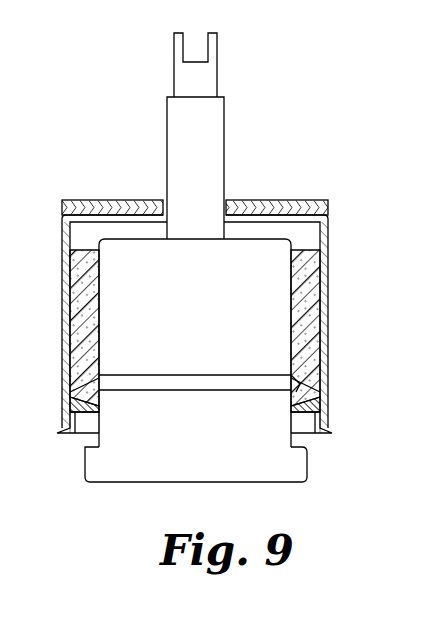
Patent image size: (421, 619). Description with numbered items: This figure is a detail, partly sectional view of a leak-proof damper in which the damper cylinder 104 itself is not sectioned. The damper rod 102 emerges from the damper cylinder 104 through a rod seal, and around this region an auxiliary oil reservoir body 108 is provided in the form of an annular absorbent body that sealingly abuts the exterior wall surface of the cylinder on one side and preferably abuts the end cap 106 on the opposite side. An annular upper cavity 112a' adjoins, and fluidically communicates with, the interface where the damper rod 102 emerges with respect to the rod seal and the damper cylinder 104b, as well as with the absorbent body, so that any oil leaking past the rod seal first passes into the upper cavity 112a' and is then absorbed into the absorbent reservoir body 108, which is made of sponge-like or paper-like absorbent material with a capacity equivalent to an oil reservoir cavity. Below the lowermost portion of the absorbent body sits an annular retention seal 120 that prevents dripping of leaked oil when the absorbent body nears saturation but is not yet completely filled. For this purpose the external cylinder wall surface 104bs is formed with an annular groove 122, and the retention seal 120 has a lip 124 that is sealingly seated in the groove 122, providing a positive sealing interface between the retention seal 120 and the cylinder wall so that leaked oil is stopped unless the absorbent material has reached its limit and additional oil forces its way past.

The damper rod 102 is at (232, 143).
The damper cylinder 104 is at (239, 324).
The damper cylinder 104b is at (297, 428).
The external cylinder wall surface 104bs is at (292, 306).
The end cap 106 is at (329, 240).
The auxiliary oil reservoir body 108 is at (307, 249).
The annular upper cavity 112a' is at (186, 177).
The annular retention seal 120 is at (79, 427).
The annular groove 122 is at (177, 383).
The lip 124 is at (100, 383).